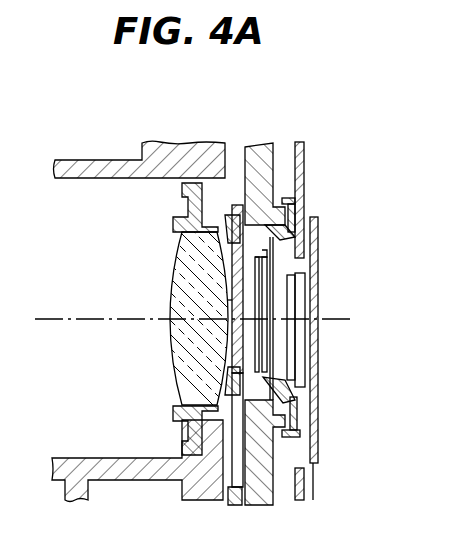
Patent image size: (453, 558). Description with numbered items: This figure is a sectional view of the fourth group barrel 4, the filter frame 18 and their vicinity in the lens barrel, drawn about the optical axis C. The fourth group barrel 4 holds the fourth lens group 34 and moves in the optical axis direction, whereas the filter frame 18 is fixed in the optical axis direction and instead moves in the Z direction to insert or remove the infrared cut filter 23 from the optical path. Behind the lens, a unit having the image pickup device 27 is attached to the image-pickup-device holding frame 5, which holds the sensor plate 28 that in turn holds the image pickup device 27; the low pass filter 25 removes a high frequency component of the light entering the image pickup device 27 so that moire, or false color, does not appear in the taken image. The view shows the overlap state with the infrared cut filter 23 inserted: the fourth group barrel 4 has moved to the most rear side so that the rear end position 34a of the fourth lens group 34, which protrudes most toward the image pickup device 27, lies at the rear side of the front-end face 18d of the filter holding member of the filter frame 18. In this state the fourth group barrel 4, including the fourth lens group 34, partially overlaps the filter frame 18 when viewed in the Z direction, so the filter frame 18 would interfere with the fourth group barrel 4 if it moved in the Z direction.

The fourth group barrel 4 is at (178, 205).
The image-pickup-device holding frame 5 is at (262, 150).
The filter frame 18 is at (238, 207).
The front-end face 18d is at (187, 257).
The infrared cut filter 23 is at (240, 290).
The low pass filter 25 is at (272, 337).
The image pickup device 27 is at (312, 375).
The sensor plate 28 is at (305, 150).
The fourth lens group 34 is at (172, 297).
The rear end position 34a is at (237, 308).
The optical axis C is at (58, 316).